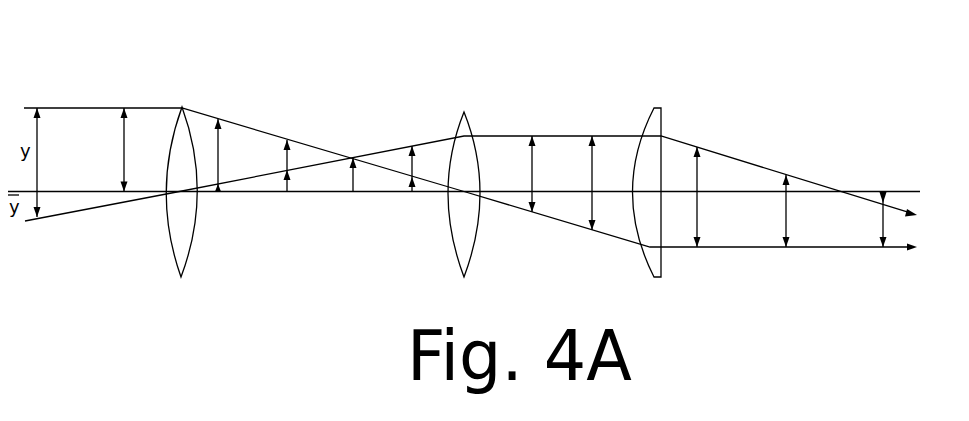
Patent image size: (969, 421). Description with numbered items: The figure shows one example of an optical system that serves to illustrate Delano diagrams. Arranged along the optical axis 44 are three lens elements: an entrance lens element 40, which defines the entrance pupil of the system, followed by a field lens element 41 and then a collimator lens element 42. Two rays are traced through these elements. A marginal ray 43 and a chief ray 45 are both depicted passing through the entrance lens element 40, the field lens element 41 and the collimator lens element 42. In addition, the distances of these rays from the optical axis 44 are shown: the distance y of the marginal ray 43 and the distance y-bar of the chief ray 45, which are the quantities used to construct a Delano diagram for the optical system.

The entrance lens element 40 is at (193, 133).
The field lens element 41 is at (466, 111).
The collimator lens element 42 is at (660, 121).
The marginal ray 43 is at (77, 108).
The optical axis 44 is at (270, 193).
The chief ray 45 is at (65, 214).